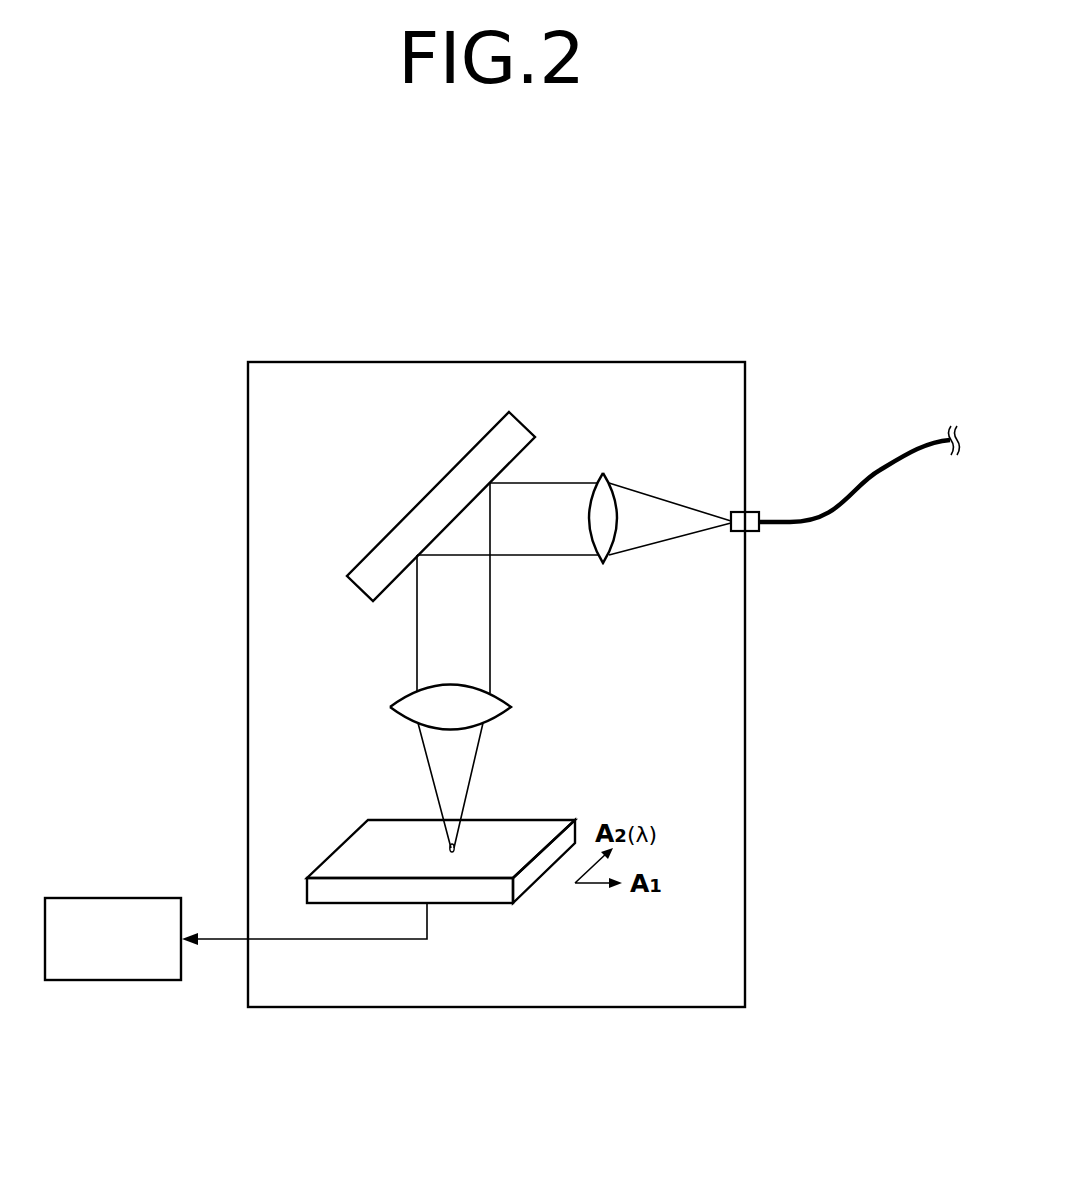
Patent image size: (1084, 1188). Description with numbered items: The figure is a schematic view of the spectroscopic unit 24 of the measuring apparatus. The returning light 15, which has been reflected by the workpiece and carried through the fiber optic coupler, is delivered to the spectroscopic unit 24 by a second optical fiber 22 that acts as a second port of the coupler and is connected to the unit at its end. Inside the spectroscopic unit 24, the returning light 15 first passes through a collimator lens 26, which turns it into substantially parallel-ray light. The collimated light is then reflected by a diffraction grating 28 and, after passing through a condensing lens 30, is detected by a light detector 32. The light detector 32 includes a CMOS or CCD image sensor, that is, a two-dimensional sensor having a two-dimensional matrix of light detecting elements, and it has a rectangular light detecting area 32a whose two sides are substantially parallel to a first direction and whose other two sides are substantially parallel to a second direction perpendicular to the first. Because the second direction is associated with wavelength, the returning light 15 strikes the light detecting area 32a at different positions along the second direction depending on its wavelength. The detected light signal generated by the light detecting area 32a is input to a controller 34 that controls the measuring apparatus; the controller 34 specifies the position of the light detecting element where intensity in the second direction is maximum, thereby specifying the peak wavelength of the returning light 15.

The returning light 15 is at (428, 768).
The second optical fiber 22 is at (875, 472).
The spectroscopic unit 24 is at (248, 440).
The collimator lens 26 is at (603, 472).
The diffraction grating 28 is at (427, 492).
The condensing lens 30 is at (497, 705).
The light detector 32 is at (530, 882).
The light detecting area 32a is at (518, 832).
The controller 34 is at (119, 897).